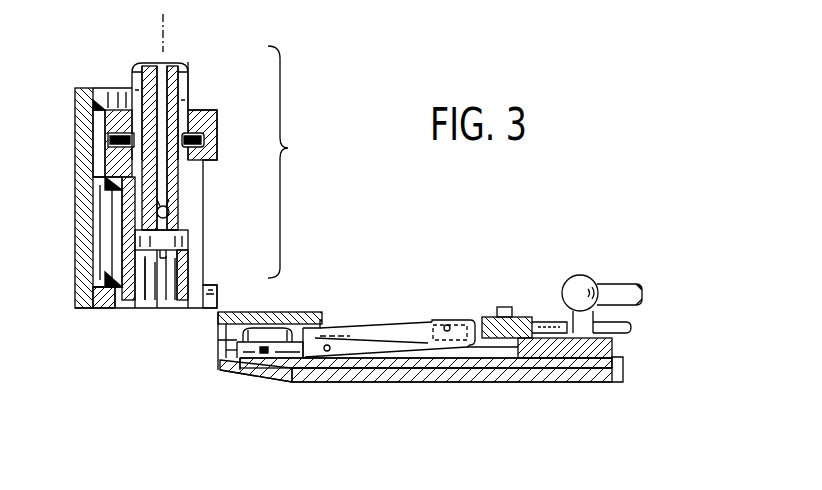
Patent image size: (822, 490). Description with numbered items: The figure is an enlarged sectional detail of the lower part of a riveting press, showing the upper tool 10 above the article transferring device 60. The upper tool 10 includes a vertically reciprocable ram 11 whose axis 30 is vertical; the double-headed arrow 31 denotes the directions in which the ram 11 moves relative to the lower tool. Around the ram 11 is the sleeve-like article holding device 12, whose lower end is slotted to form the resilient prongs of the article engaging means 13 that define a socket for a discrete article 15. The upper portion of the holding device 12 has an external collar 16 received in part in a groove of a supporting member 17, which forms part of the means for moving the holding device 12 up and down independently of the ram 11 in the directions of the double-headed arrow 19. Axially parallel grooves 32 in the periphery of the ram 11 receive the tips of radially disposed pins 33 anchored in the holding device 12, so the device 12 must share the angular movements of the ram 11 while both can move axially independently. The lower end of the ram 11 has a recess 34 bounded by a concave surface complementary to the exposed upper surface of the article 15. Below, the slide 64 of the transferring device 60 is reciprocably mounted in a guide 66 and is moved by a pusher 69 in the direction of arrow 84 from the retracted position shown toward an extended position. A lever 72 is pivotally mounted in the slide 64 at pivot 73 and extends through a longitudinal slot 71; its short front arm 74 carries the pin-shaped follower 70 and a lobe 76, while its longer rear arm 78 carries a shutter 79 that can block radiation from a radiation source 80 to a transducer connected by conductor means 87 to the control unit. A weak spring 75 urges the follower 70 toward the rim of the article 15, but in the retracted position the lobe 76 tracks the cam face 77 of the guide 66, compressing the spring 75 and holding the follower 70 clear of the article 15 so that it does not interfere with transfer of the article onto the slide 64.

The upper tool 10 is at (295, 162).
The ram 11 is at (173, 58).
The article holding device 12 is at (205, 237).
The article engaging means 13 is at (176, 302).
The article 15 is at (270, 333).
The external collar 16 is at (108, 140).
The supporting member 17 is at (87, 220).
The double-headed arrow 19 is at (214, 208).
The axis 30 is at (170, 21).
The double-headed arrow 31 is at (147, 46).
The grooves 32 is at (182, 100).
The pins 33 is at (120, 137).
The recess 34 is at (167, 258).
The transferring device 60 is at (557, 382).
The slide 64 is at (597, 350).
The guide 66 is at (527, 370).
The pusher 69 is at (636, 294).
The follower 70 is at (230, 372).
The slot 71 is at (478, 350).
The lever 72 is at (407, 340).
The pivot 73 is at (330, 346).
The front arm 74 is at (281, 372).
The spring 75 is at (300, 374).
The lobe 76 is at (322, 333).
The cam face 77 is at (295, 335).
The rear arm 78 is at (433, 320).
The shutter 79 is at (462, 315).
The radiation source 80 is at (502, 317).
The arrow 84 is at (612, 396).
The conductor means 87 is at (630, 324).